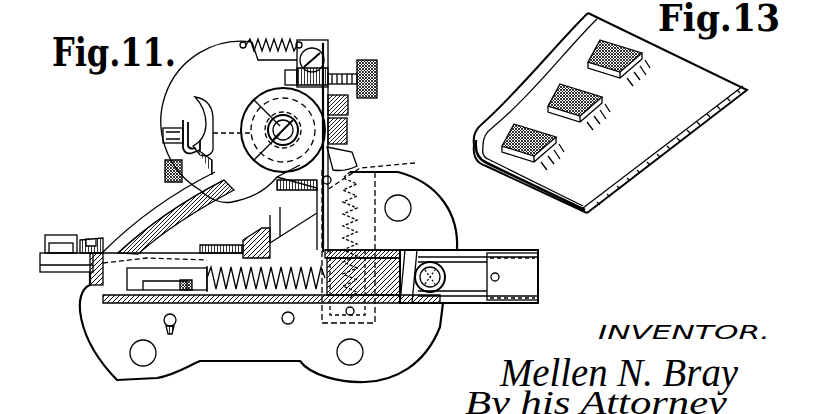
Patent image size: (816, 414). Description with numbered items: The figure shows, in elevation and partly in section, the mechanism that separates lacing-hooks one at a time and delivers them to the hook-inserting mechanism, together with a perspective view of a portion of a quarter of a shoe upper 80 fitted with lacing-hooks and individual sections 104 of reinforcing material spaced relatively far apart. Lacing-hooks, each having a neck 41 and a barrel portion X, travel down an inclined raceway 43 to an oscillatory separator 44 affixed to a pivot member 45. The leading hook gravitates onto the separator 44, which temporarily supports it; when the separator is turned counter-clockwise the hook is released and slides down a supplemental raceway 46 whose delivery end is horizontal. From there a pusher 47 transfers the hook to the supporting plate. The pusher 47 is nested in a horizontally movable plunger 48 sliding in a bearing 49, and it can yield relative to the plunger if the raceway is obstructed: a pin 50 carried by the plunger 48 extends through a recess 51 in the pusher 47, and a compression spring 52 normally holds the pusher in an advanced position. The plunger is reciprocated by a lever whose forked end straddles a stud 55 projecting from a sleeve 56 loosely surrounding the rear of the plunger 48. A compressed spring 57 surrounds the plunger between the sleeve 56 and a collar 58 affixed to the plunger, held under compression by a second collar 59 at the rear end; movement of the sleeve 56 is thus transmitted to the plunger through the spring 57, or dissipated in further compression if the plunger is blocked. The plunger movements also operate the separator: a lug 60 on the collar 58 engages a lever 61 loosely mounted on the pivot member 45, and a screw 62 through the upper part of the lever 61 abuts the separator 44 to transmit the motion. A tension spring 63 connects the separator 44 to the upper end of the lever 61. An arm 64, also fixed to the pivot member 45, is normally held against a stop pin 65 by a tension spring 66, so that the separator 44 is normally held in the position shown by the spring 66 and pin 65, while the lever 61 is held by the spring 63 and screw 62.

In FIG. 11, the neck 41 is at (182, 118).
In FIG. 11, the inclined raceway 43 is at (191, 108).
In FIG. 11, the oscillatory separator 44 is at (230, 121).
In FIG. 11, the pivot member 45 is at (281, 128).
In FIG. 11, the supplemental raceway 46 is at (157, 218).
In FIG. 11, the pusher 47 is at (97, 275).
In FIG. 11, the horizontally movable plunger 48 is at (220, 296).
In FIG. 11, the bearing 49 is at (117, 313).
In FIG. 11, the pin 50 is at (187, 282).
In FIG. 11, the recess 51 is at (160, 290).
In FIG. 11, the compression spring 52 is at (228, 285).
In FIG. 11, the stud 55 is at (442, 283).
In FIG. 11, the sleeve 56 is at (470, 252).
In FIG. 11, the compressed spring 57 is at (409, 258).
In FIG. 11, the collar 58 is at (262, 305).
In FIG. 11, the collar 59 is at (523, 252).
In FIG. 11, the lug 60 is at (245, 242).
In FIG. 11, the lever 61 is at (300, 207).
In FIG. 11, the screw 62 is at (333, 70).
In FIG. 11, the tension spring 63 is at (328, 24).
In FIG. 11, the arm 64 is at (344, 150).
In FIG. 11, the stop pin 65 is at (352, 168).
In FIG. 11, the tension spring 66 is at (384, 171).
In FIG. 11, the barrel portion x is at (163, 137).
In FIG. 13, the upper 80 is at (647, 167).
In FIG. 13, the individual sections 104 is at (593, 63).